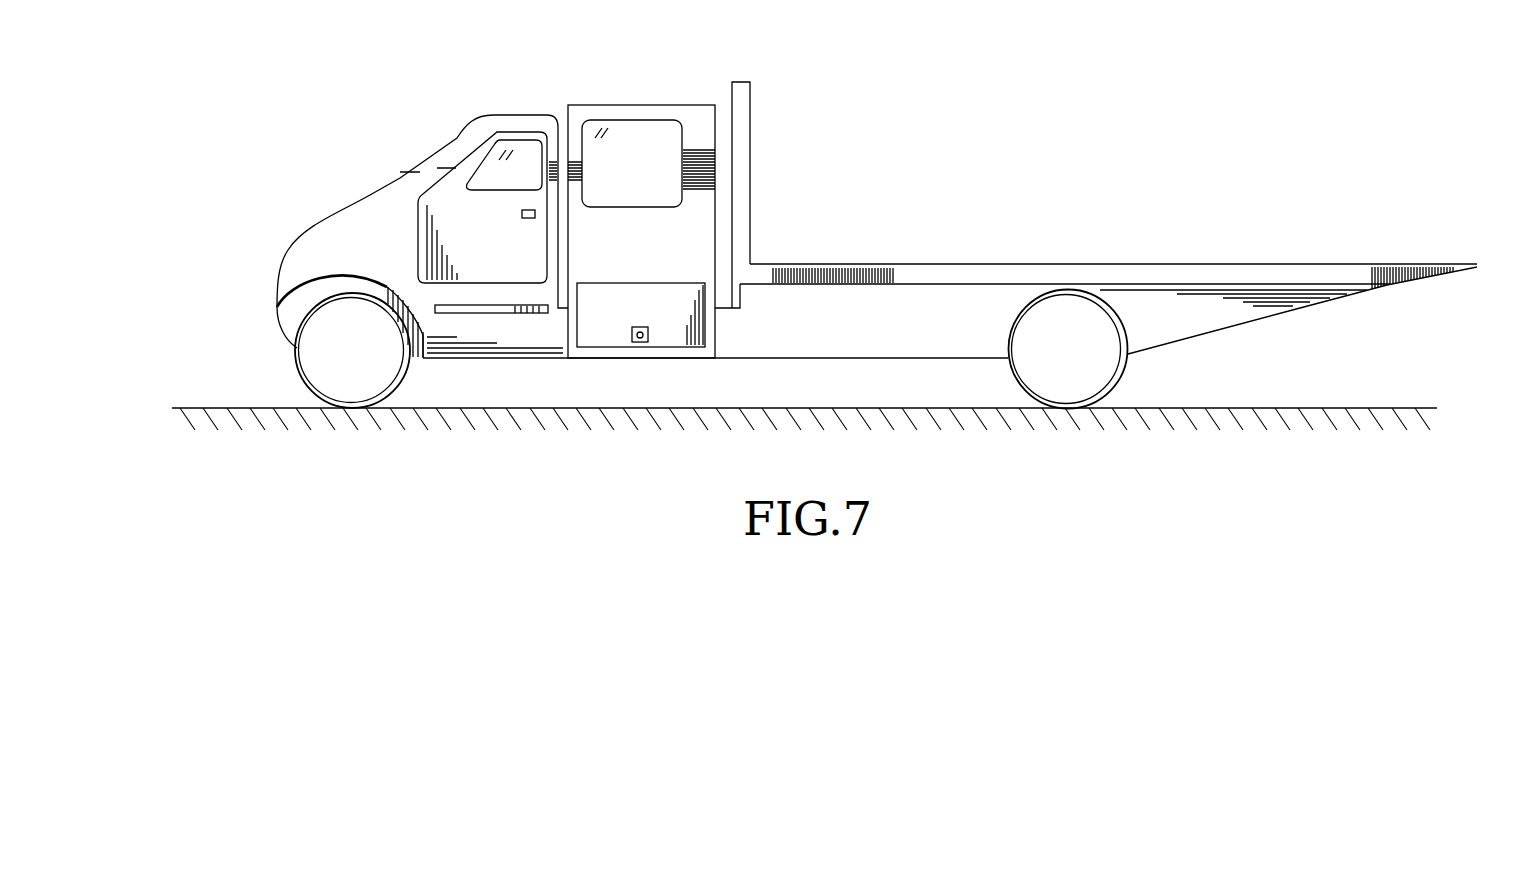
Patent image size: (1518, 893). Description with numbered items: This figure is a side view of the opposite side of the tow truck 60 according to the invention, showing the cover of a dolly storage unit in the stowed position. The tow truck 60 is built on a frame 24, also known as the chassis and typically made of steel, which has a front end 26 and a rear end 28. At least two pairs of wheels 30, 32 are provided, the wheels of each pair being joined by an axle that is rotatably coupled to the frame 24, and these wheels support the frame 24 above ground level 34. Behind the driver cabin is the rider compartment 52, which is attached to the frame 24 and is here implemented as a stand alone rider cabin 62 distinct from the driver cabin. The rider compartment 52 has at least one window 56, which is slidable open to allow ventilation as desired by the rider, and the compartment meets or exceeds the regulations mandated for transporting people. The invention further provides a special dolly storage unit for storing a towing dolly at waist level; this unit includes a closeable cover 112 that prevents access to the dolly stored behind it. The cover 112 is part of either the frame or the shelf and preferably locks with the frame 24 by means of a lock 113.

The frame 24 is at (845, 335).
The front end 26 is at (270, 287).
The rear end 28 is at (1370, 302).
The wheels 30 is at (1095, 387).
The wheels 32 is at (347, 380).
The ground level 34 is at (1263, 409).
The rider compartment 52 is at (588, 105).
The window 56 is at (648, 178).
The tow truck 60 is at (1045, 82).
The stand alone rider cabin 62 is at (695, 115).
The closeable cover 112 is at (665, 333).
The lock 113 is at (640, 342).